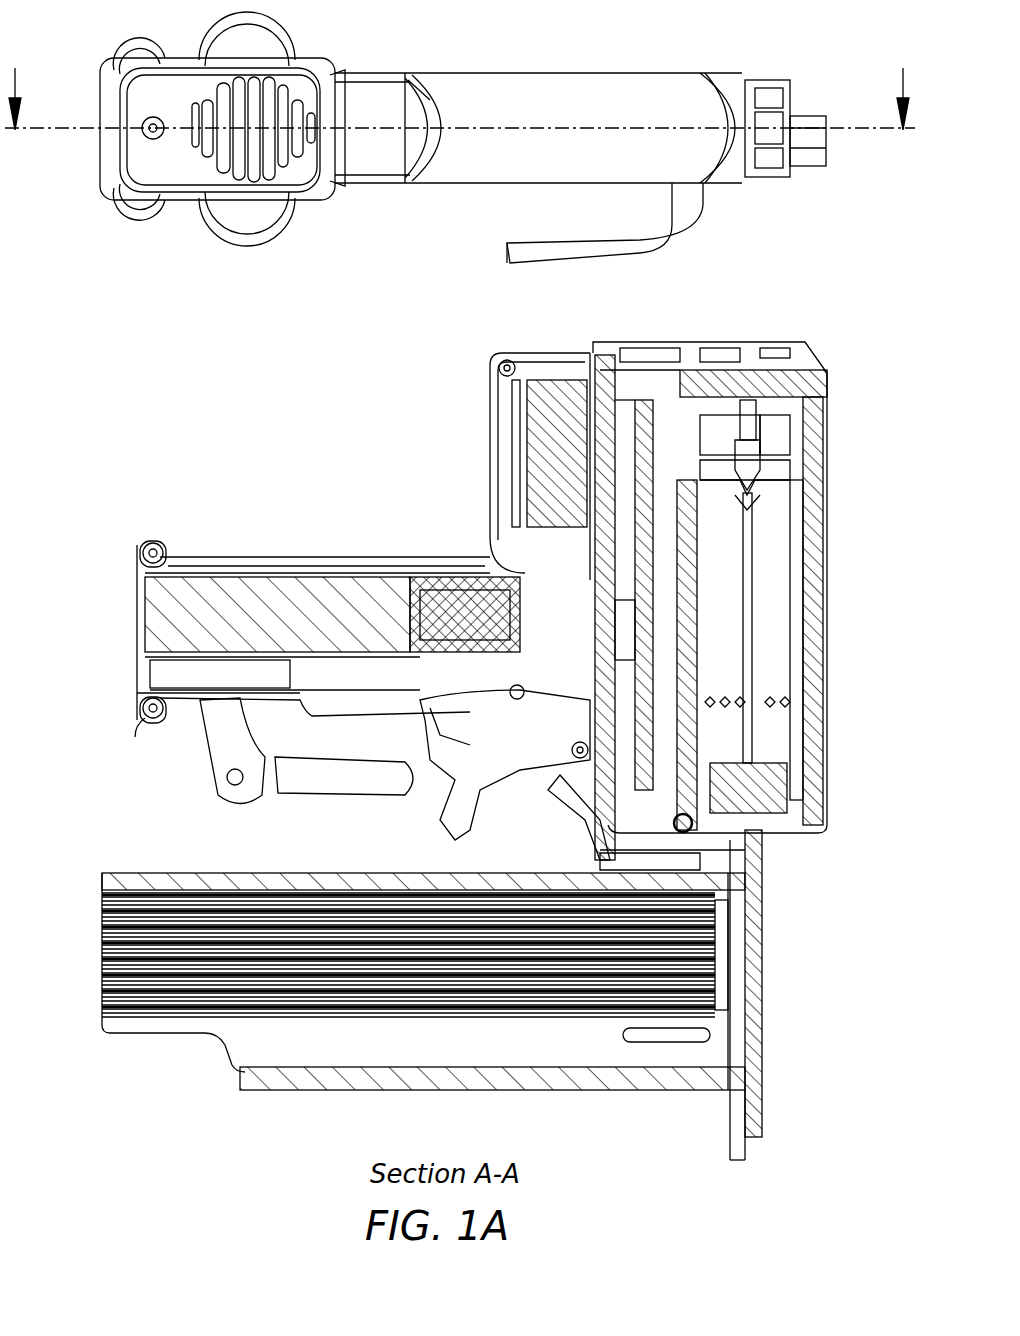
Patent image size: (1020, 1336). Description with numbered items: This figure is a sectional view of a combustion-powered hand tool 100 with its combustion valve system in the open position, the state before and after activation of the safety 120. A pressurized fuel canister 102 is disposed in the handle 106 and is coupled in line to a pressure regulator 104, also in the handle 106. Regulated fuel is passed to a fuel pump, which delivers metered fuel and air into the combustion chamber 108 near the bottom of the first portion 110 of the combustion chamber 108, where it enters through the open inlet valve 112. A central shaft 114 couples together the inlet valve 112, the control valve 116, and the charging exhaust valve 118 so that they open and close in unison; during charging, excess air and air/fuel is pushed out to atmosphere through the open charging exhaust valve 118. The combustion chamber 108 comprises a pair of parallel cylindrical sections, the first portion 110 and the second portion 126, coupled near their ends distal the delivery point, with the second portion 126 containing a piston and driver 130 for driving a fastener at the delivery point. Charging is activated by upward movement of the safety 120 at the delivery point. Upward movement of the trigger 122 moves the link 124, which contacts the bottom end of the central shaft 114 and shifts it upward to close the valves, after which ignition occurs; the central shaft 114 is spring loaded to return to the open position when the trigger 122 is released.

The hand tool 100 is at (778, 58).
The pressurized fuel canister 102 is at (245, 575).
The pressure regulator 104 is at (452, 568).
The handle 106 is at (590, 68).
The combustion chamber 108 is at (710, 432).
The first portion of the combustion chamber 110 is at (610, 565).
The inlet valve 112 is at (580, 812).
The central shaft 114 is at (620, 543).
The control valve 116 is at (600, 482).
The charging exhaust valve 118 is at (605, 410).
The safety 120 is at (752, 1150).
The trigger 122 is at (610, 795).
The link 124 is at (598, 868).
The second portion of the combustion chamber 126 is at (785, 447).
The piston and driver 130 is at (773, 483).